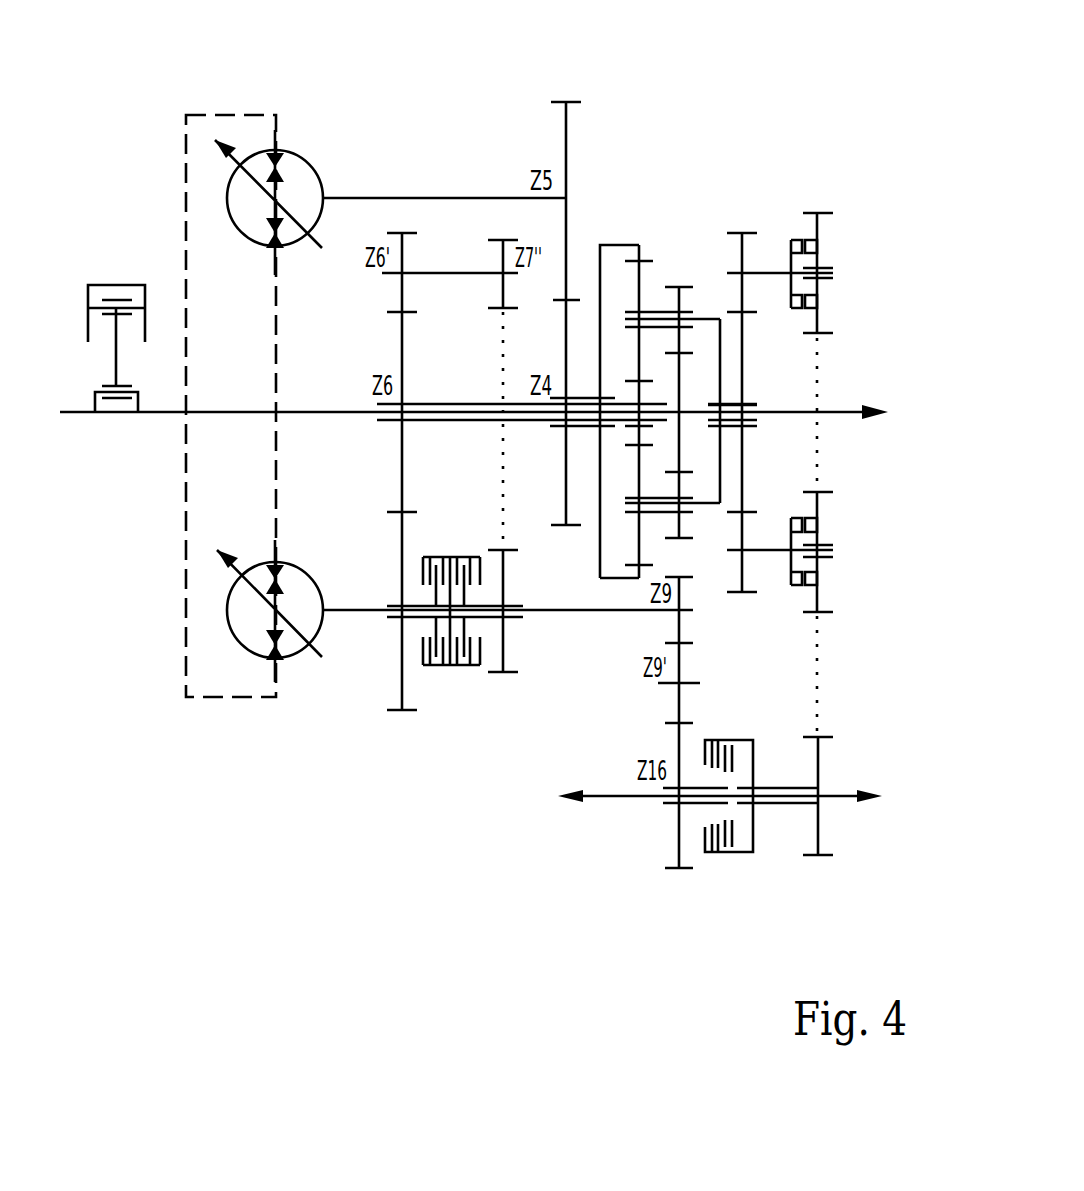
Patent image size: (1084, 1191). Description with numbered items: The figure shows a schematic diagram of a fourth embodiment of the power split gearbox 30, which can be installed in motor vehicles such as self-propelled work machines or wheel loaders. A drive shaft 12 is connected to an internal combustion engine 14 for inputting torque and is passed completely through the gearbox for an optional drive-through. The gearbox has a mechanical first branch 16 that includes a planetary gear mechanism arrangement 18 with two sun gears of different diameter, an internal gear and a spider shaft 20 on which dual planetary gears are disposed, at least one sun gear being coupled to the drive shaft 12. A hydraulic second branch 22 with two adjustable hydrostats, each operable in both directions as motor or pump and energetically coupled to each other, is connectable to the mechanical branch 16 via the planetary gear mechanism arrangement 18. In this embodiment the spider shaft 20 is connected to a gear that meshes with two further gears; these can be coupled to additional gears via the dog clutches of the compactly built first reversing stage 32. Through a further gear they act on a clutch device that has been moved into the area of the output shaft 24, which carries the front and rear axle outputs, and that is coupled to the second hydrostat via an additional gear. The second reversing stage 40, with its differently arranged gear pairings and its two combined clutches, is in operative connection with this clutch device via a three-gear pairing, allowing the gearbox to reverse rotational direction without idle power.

The drive shaft 12 is at (221, 414).
The internal combustion engine 14 is at (115, 267).
The mechanical first branch 16 is at (624, 158).
The planetary gear mechanism arrangement 18 is at (682, 195).
The spider shaft 20 is at (718, 358).
The hydraulic second branch 22 is at (260, 81).
The output shaft 24 is at (617, 797).
The power split gearbox 30 is at (787, 368).
The first reversing stage 32 is at (754, 134).
The second reversing stage 40 is at (421, 750).